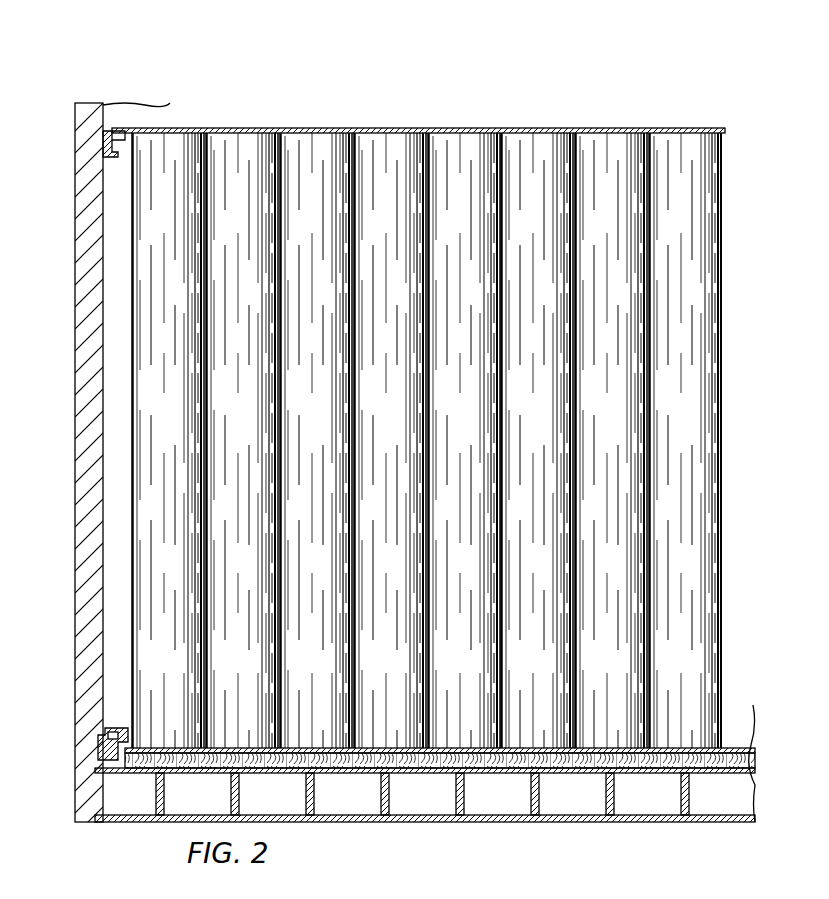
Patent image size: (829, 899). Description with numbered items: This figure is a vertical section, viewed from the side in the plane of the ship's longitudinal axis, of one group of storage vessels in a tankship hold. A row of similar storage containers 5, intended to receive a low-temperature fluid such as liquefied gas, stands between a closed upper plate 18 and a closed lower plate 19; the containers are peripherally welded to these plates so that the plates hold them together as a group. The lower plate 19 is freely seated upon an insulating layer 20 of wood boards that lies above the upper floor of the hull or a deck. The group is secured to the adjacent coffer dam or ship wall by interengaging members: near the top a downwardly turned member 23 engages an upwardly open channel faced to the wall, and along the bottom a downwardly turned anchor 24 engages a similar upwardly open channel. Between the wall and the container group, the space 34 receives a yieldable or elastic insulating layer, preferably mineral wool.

The storage receptacle or container 5 is at (694, 449).
The closed upper plate 18 is at (398, 128).
The closed lower plate 19 is at (372, 748).
The insulating layer 20 is at (418, 773).
The downwardly turned member 23 is at (110, 130).
The downwardly turned anchor 24 is at (105, 730).
The yieldable or elastic insulating layer space 34 is at (110, 300).